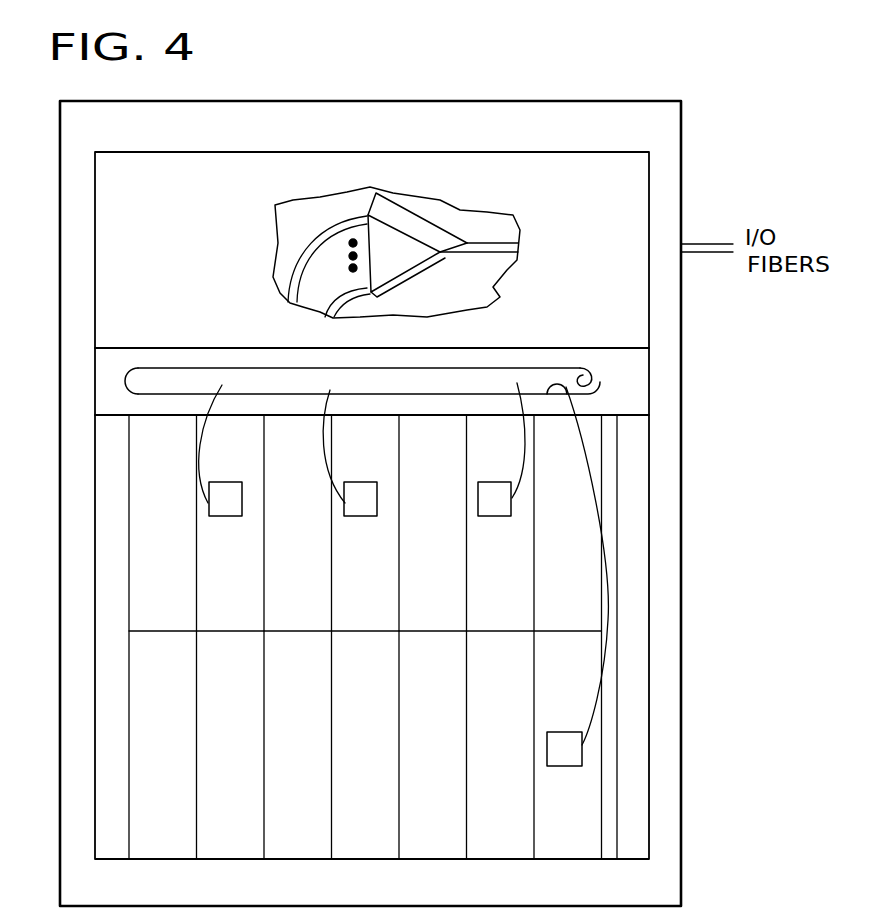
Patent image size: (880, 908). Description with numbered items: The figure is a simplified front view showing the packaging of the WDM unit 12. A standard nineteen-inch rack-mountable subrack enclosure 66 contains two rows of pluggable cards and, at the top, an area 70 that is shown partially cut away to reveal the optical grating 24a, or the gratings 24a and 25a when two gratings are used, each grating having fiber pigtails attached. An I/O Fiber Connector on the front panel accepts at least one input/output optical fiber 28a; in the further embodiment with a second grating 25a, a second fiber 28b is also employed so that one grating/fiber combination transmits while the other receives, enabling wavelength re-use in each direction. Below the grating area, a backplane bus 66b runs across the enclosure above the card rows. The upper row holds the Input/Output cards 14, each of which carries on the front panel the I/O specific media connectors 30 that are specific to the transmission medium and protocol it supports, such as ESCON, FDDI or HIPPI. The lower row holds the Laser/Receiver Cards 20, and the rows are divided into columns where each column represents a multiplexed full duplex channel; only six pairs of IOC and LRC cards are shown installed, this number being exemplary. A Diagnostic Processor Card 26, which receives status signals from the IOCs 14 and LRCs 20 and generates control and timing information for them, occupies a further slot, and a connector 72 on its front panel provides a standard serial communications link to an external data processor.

The WDM unit 12 is at (521, 81).
The subrack enclosure 66 is at (649, 173).
The area 70 is at (187, 266).
The optical grating 24a is at (417, 256).
The second grating 25a is at (423, 218).
The input/output optical fiber 28a is at (733, 257).
The second fiber 28b is at (700, 244).
The backplane bus 66b is at (580, 368).
The I/O specific media connectors 30 is at (222, 516).
The Input/Output card 14 is at (173, 610).
The Laser/Receiver Card 20 is at (173, 820).
The Diagnostic Processor Card 26 is at (582, 695).
The connector 72 is at (565, 767).